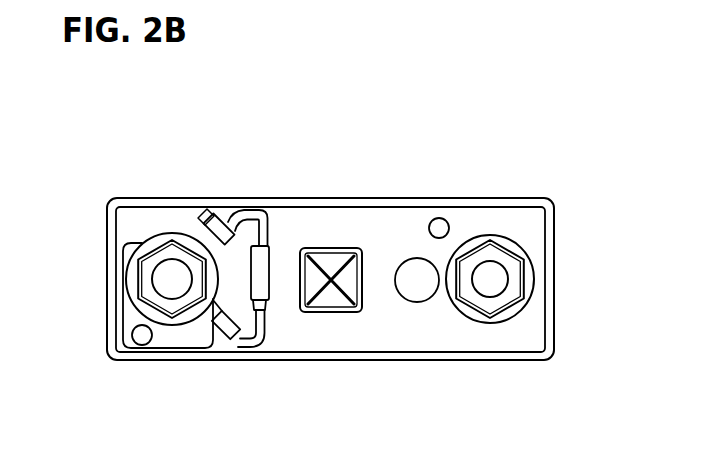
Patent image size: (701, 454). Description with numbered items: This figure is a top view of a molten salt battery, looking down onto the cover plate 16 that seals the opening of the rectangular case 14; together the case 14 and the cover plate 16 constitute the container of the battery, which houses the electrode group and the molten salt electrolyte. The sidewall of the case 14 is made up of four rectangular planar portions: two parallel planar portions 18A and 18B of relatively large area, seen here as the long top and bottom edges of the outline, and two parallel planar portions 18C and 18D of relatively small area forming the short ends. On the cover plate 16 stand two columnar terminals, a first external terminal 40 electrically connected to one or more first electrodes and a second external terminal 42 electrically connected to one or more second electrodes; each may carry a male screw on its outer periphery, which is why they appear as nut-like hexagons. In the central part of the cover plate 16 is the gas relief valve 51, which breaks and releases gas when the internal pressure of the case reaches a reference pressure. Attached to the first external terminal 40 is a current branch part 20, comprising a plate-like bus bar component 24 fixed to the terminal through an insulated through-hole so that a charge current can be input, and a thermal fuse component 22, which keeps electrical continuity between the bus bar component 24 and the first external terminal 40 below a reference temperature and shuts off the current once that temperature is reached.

The case 14 is at (556, 223).
The cover plate 16 is at (400, 227).
The planar portion 18A is at (328, 360).
The planar portion 18B is at (386, 205).
The planar portion 18C is at (556, 280).
The planar portion 18D is at (107, 267).
The current branch part 20 is at (277, 233).
The thermal fuse component 22 is at (252, 268).
The bus bar component 24 is at (175, 343).
The first external terminal 40 is at (172, 272).
The second external terminal 42 is at (488, 278).
The gas relief valve 51 is at (299, 313).